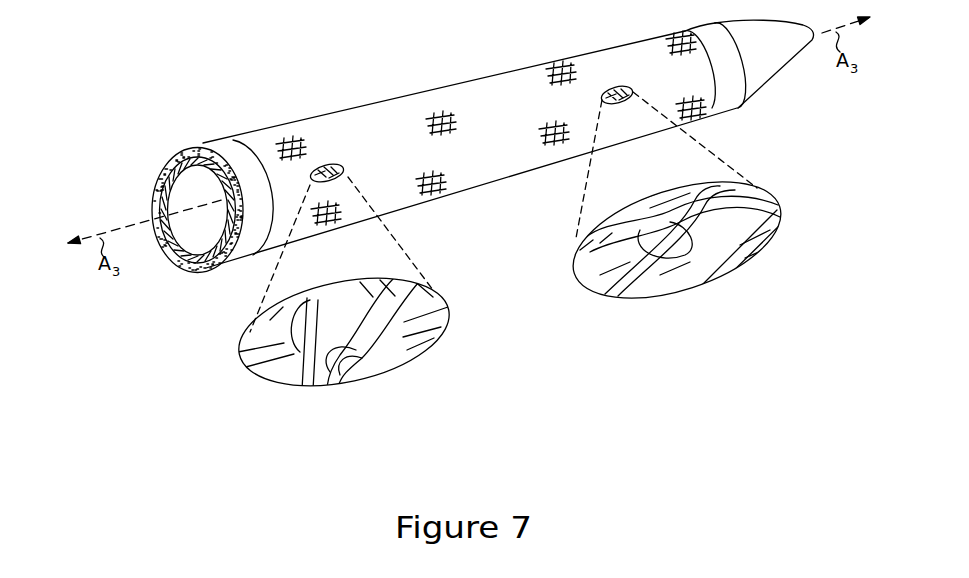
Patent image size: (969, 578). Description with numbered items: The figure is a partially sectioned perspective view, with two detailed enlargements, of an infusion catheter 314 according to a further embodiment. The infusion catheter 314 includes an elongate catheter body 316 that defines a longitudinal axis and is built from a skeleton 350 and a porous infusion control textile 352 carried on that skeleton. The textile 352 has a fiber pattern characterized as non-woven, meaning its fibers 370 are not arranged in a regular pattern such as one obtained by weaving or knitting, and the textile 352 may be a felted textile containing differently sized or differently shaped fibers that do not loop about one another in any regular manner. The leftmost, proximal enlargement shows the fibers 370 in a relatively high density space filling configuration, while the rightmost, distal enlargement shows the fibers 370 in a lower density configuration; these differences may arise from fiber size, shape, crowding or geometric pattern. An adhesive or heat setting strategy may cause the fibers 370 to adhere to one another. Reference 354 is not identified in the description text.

The infusion catheter 314 is at (115, 154).
The elongate catheter body 316 is at (312, 123).
The skeleton 350 is at (174, 262).
The porous infusion control textile 352 is at (414, 104).
The fibers 354 is at (276, 373).
The fibers 370 is at (402, 350).